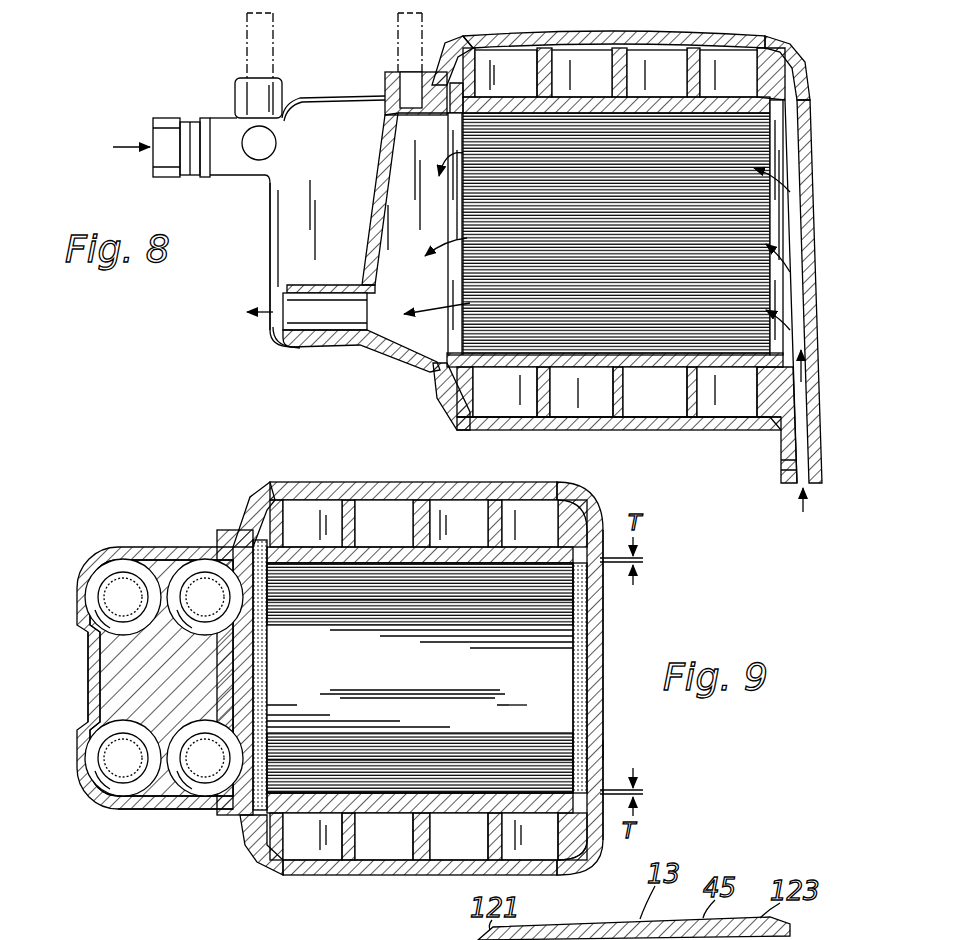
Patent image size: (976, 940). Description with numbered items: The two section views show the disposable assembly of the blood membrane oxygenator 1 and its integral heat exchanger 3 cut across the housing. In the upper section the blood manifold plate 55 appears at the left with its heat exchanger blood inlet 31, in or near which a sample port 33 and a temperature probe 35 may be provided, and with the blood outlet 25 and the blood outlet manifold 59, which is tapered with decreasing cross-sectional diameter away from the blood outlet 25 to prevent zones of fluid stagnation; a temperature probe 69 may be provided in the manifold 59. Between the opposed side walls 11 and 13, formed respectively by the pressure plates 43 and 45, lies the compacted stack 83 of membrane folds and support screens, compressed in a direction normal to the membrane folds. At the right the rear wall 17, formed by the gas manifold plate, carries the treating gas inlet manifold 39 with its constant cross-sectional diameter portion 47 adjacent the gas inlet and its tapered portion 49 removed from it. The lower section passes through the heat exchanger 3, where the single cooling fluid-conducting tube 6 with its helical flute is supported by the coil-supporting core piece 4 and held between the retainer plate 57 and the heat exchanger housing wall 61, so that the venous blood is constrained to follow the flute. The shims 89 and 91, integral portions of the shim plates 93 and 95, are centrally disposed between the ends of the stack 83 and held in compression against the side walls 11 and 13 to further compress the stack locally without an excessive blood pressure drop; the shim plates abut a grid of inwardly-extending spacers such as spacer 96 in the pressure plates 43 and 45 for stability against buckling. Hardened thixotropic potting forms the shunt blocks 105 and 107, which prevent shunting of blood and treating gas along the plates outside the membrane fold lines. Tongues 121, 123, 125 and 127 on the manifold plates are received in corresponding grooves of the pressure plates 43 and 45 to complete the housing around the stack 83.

In FIG. 9, the blood membrane oxygenator 1 is at (612, 748).
In FIG. 8, the integral heat exchanger 3 is at (263, 266).
In FIG. 9, the integral heat exchanger 3 is at (85, 670).
In FIG. 9, the coil-supporting core piece 4 is at (90, 692).
In FIG. 9, the cooling fluid-conducting tube 6 is at (127, 572).
In FIG. 8, the side wall 11 is at (550, 427).
In FIG. 9, the side wall 13 is at (410, 482).
In FIG. 9, the rear wall 17 is at (607, 634).
In FIG. 8, the blood outlet 25 is at (295, 339).
In FIG. 8, the heat exchanger blood inlet 31 is at (172, 125).
In FIG. 8, the sample port 33 is at (260, 147).
In FIG. 8, the temperature probe 35 is at (245, 30).
In FIG. 8, the treating gas inlet manifold 39 is at (809, 306).
In FIG. 8, the pressure plate 43 is at (640, 426).
In FIG. 9, the pressure plate 43 is at (408, 876).
In FIG. 8, the pressure plate 45 is at (720, 46).
In FIG. 9, the pressure plate 45 is at (368, 482).
In FIG. 8, the constant cross-sectional diameter portion 47 is at (813, 340).
In FIG. 8, the tapered portion 49 is at (803, 239).
In FIG. 8, the blood manifold plate 55 is at (400, 358).
In FIG. 9, the blood manifold plate 55 is at (132, 806).
In FIG. 9, the retainer plate 57 is at (270, 690).
In FIG. 8, the blood outlet manifold 59 is at (383, 193).
In FIG. 9, the heat exchanger housing wall 61 is at (90, 712).
In FIG. 8, the temperature probe 69 is at (398, 40).
In FIG. 8, the compacted stack 83 is at (643, 229).
In FIG. 9, the compacted stack 83 is at (445, 673).
In FIG. 9, the shim 89 is at (450, 813).
In FIG. 9, the shim 91 is at (400, 547).
In FIG. 8, the shim plate 93 is at (640, 370).
In FIG. 9, the shim plate 93 is at (393, 813).
In FIG. 8, the shim plate 95 is at (590, 96).
In FIG. 9, the shim plate 95 is at (462, 547).
In FIG. 8, the spacer 96 is at (655, 50).
In FIG. 9, the spacer 96 is at (440, 500).
In FIG. 9, the shunt block 105 is at (270, 622).
In FIG. 9, the shunt block 107 is at (572, 688).
In FIG. 8, the tongue 121 is at (492, 49).
In FIG. 9, the tongue 121 is at (290, 500).
In FIG. 8, the tongue 123 is at (775, 56).
In FIG. 9, the tongue 123 is at (560, 500).
In FIG. 8, the tongue 125 is at (447, 420).
In FIG. 9, the tongue 125 is at (283, 871).
In FIG. 8, the tongue 127 is at (745, 438).
In FIG. 9, the tongue 127 is at (549, 874).